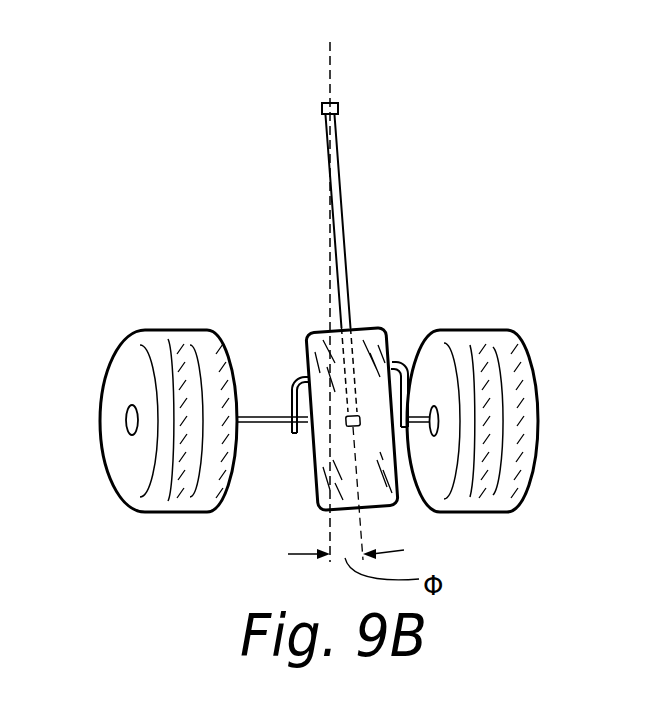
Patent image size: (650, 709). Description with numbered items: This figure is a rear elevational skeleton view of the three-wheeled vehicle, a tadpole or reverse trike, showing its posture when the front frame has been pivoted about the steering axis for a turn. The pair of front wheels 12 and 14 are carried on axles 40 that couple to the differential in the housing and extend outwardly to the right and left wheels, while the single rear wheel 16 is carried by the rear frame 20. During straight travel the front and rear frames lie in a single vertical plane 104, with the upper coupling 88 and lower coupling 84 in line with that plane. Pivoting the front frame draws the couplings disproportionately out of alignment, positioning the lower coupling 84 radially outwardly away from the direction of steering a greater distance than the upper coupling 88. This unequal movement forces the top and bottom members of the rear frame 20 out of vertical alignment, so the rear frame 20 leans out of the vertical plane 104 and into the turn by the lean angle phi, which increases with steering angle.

The front wheel 12 is at (537, 372).
The front wheel 14 is at (103, 402).
The rear wheel 16 is at (313, 482).
The rear frame 20 is at (345, 244).
The axles 40 is at (260, 424).
The lower coupling 84 is at (345, 419).
The upper coupling 88 is at (343, 103).
The vertical plane 104 is at (328, 67).